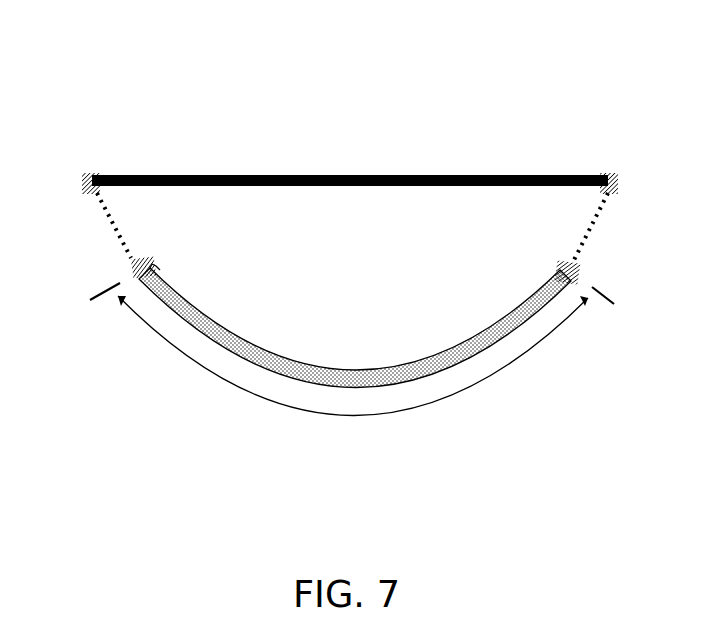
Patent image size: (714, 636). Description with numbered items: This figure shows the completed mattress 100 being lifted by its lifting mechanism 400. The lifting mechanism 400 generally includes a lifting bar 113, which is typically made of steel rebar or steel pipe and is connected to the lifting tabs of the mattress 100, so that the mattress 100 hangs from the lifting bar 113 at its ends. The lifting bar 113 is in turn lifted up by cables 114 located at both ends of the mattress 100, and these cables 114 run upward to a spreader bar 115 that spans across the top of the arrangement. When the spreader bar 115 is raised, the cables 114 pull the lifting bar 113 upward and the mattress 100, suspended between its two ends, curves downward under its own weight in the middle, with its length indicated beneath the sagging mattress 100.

The lifting mechanism 400 is at (334, 100).
The spreader bar 115 is at (368, 174).
The cables 114 is at (103, 218).
The lifting bar 113 is at (578, 277).
The completed mattress 100 is at (333, 370).